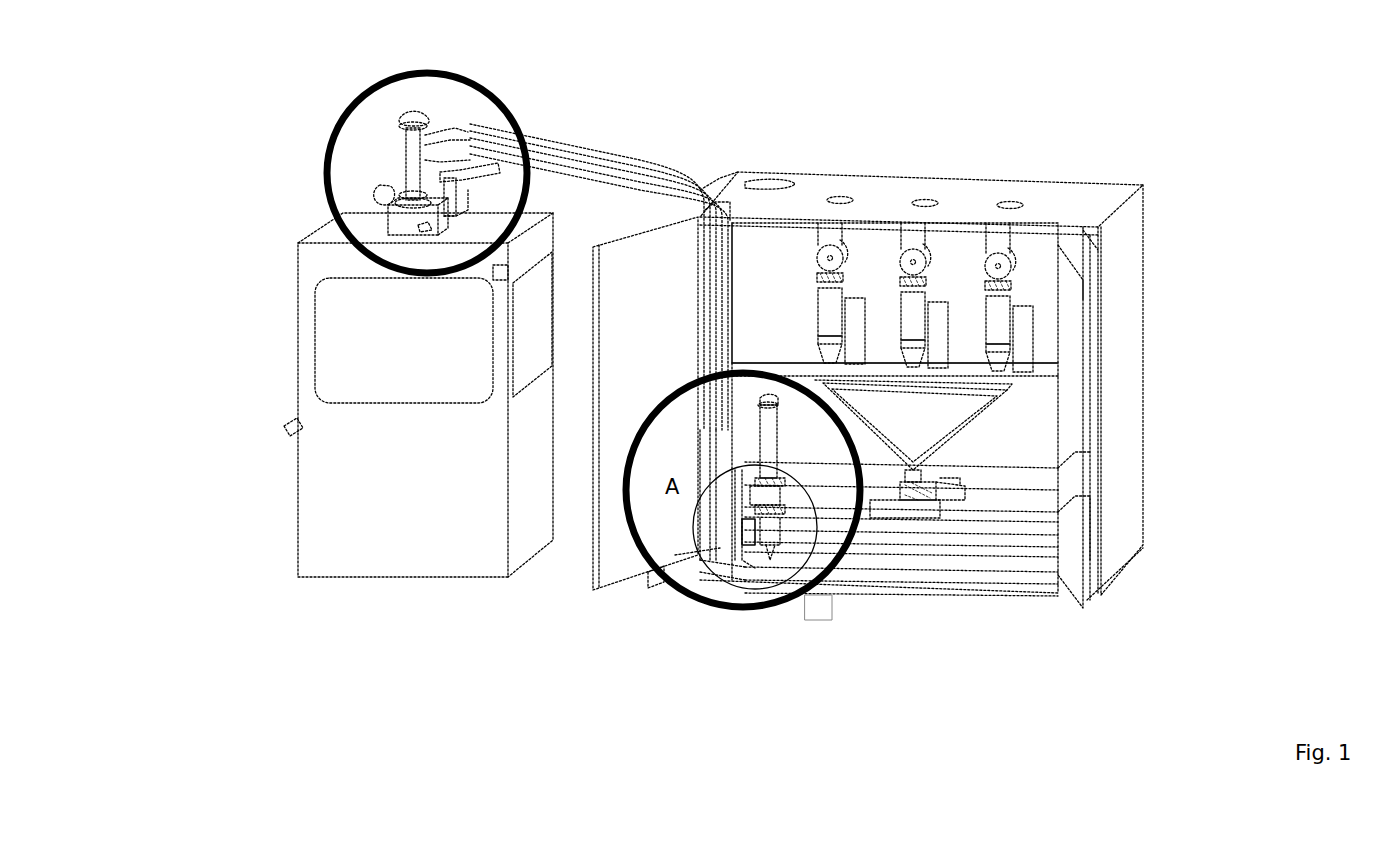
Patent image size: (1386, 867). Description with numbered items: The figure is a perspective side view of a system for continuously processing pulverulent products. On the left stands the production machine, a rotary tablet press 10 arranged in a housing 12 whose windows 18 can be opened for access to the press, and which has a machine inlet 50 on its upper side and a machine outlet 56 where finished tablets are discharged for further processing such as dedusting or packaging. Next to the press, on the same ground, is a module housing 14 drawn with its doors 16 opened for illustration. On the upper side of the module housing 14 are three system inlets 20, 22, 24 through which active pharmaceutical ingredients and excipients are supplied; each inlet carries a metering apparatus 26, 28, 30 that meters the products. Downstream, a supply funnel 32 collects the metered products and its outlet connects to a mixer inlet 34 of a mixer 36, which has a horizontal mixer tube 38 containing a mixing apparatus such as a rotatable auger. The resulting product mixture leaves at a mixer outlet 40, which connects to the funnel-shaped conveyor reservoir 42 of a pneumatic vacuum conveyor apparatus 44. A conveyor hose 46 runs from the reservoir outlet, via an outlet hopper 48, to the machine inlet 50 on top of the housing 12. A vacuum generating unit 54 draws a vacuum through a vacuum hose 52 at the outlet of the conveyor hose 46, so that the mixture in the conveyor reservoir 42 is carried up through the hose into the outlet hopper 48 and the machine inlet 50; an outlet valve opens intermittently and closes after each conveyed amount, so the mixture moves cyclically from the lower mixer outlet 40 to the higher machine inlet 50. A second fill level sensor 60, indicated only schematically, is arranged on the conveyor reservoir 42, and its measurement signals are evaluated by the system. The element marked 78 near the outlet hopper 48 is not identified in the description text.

The rotary tablet press 10 is at (293, 328).
The housing 12 is at (322, 514).
The module housing 14 is at (1132, 291).
The doors 16 is at (625, 562).
The windows 18 is at (427, 387).
The system inlet 20 is at (1010, 198).
The system inlet 22 is at (928, 195).
The system inlet 24 is at (840, 193).
The metering apparatus 26 is at (1003, 315).
The metering apparatus 28 is at (920, 310).
The metering apparatus 30 is at (827, 310).
The supply funnel 32 is at (967, 427).
The mixer inlet 34 is at (967, 490).
The mixer 36 is at (917, 566).
The mixer tube 38 is at (840, 500).
The mixer outlet 40 is at (780, 510).
The conveyor reservoir 42 is at (770, 545).
The conveyor apparatus 44 is at (628, 142).
The conveyor hose 46 is at (620, 165).
The outlet hopper 48 is at (410, 165).
The machine inlet 50 is at (395, 237).
The vacuum hose 52 is at (545, 125).
The vacuum generating unit 54 is at (923, 540).
The machine outlet 56 is at (283, 432).
The second fill level sensor 60 is at (745, 540).
The outlet fitting 78 is at (478, 193).